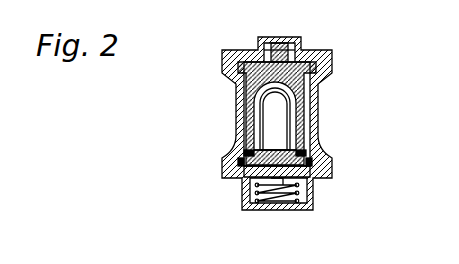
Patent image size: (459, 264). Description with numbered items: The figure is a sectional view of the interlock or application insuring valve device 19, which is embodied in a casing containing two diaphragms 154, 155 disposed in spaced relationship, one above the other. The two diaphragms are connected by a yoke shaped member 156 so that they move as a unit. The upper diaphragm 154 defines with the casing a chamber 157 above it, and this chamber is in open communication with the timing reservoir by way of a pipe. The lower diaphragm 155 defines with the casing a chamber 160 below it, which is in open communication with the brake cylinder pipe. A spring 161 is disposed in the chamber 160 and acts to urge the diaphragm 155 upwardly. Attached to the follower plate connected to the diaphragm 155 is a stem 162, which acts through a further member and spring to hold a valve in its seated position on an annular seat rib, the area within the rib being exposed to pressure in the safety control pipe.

The interlock or application insuring valve device 19 is at (282, 123).
The diaphragm 154 is at (237, 80).
The diaphragm 155 is at (322, 168).
The yoke shaped member 156 is at (250, 125).
The chamber 157 is at (289, 39).
The chamber 160 is at (318, 178).
The spring 161 is at (290, 201).
The stem 162 is at (302, 153).